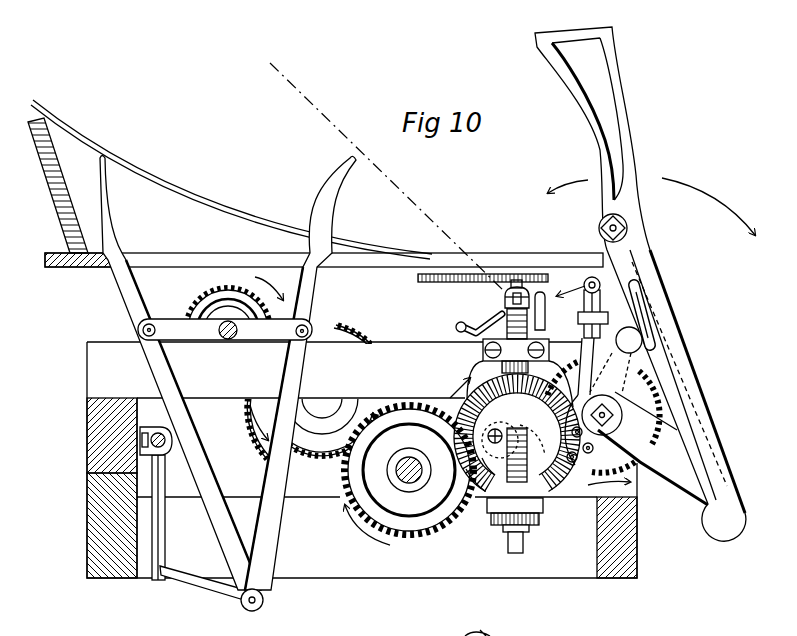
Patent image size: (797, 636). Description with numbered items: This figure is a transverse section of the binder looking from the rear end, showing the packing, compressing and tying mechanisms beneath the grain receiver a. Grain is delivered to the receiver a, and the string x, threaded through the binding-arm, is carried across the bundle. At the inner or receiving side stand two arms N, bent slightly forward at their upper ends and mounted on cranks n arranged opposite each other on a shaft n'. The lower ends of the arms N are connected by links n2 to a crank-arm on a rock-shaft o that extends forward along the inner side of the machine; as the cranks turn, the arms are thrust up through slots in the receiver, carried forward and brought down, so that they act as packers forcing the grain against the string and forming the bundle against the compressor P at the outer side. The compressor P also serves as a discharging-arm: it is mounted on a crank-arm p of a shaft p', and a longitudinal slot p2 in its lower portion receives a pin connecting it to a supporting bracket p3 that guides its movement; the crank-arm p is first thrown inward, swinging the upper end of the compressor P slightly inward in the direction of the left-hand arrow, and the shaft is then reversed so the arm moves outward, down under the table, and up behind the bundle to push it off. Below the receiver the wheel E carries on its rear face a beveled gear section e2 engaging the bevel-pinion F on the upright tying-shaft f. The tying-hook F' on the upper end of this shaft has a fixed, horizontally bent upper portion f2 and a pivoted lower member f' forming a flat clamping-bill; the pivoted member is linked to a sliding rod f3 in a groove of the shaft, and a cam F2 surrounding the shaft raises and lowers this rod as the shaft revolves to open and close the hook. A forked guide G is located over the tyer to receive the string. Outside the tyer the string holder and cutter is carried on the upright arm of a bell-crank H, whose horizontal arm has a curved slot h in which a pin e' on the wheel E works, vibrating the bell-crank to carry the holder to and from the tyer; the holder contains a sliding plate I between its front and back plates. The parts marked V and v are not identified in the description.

The receiver a is at (231, 179).
The string x is at (387, 177).
The compressor P is at (583, 103).
The crank-arm p is at (633, 228).
The shaft p' is at (664, 319).
The longitudinal slot p2 is at (681, 407).
The supporting arm or bracket p3 is at (643, 445).
The arms N is at (226, 384).
The cranks n is at (225, 330).
The shaft n' is at (235, 325).
The links n2 is at (203, 591).
The rock-shaft o is at (157, 433).
The forked guide G is at (430, 282).
The bevel-pinion F is at (507, 373).
The tying-hook F' is at (494, 295).
The cam F2 is at (510, 513).
The tying-shaft f is at (548, 311).
The lower member of tying-hook f' is at (495, 260).
The upper portion of tying-hook f2 is at (523, 286).
The sliding rod f3 is at (530, 543).
The small lever V is at (482, 318).
The lever knob v is at (456, 327).
The bell-crank H is at (582, 336).
The curved slot h is at (450, 389).
The wheel E is at (537, 467).
The crank-arm pin e' is at (513, 437).
The beveled gear section e2 is at (493, 470).
The sliding plate I is at (477, 624).